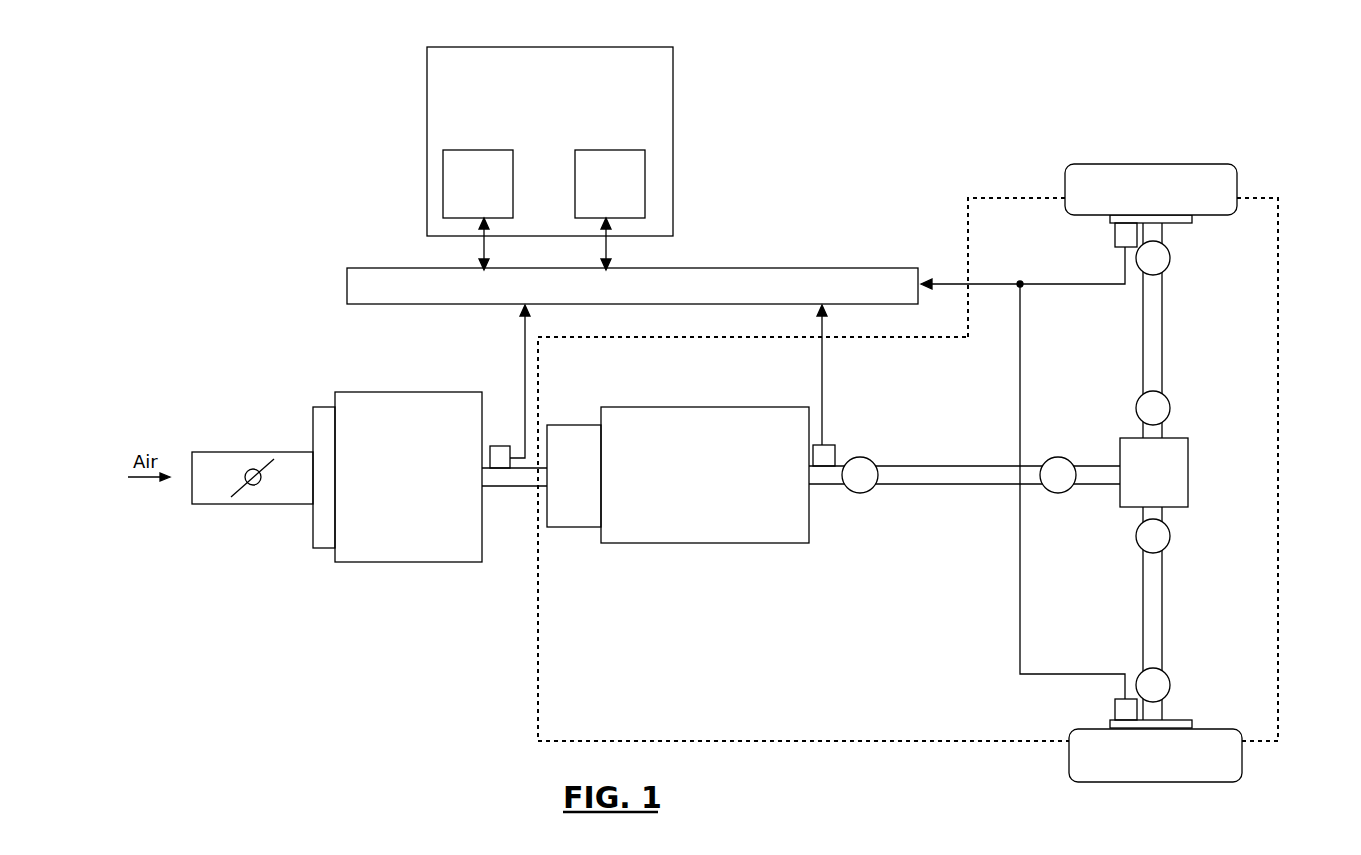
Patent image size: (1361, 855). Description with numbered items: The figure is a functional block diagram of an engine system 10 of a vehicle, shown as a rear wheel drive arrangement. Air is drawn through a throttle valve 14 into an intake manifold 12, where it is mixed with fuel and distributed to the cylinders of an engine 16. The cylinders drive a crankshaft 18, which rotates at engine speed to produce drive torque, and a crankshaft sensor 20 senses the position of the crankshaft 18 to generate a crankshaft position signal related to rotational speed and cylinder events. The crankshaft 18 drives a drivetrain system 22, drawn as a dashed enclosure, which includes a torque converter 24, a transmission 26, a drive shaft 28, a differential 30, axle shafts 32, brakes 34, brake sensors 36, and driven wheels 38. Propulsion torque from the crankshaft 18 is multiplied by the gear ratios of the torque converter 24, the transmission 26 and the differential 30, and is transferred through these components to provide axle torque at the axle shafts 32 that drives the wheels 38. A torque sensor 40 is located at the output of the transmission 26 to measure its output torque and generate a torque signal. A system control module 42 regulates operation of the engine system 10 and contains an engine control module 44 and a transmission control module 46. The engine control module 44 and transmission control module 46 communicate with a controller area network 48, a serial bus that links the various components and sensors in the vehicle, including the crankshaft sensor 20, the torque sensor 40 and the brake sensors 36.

The engine system 10 is at (345, 70).
The intake manifold 12 is at (313, 407).
The throttle valve 14 is at (248, 488).
The engine 16 is at (361, 392).
The crankshaft 18 is at (510, 487).
The crankshaft sensor 20 is at (498, 446).
The drivetrain system 22 is at (878, 740).
The torque converter 24 is at (566, 425).
The transmission 26 is at (735, 407).
The drive shaft 28 is at (916, 466).
The differential 30 is at (1188, 474).
The axle shafts 32 is at (1163, 332).
The brakes 34 is at (1196, 219).
The brake sensors 36 is at (1115, 235).
The driven wheels 38 is at (1237, 190).
The torque sensor 40 is at (833, 445).
The system control module 42 is at (553, 47).
The engine control module 44 is at (483, 150).
The transmission control module 46 is at (614, 150).
The controller area network 48 is at (700, 268).